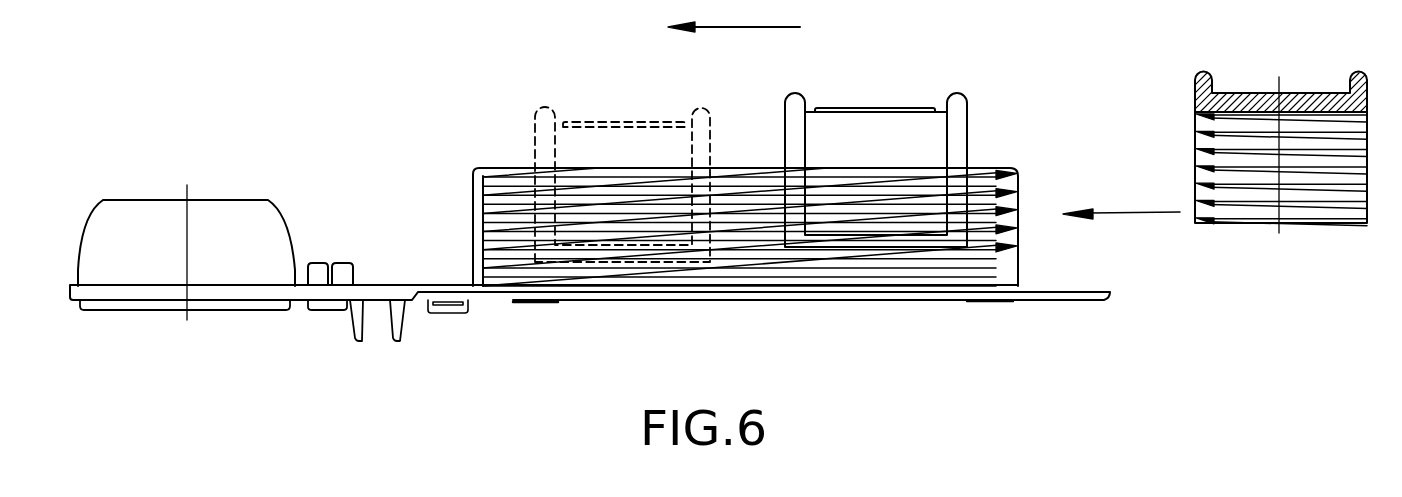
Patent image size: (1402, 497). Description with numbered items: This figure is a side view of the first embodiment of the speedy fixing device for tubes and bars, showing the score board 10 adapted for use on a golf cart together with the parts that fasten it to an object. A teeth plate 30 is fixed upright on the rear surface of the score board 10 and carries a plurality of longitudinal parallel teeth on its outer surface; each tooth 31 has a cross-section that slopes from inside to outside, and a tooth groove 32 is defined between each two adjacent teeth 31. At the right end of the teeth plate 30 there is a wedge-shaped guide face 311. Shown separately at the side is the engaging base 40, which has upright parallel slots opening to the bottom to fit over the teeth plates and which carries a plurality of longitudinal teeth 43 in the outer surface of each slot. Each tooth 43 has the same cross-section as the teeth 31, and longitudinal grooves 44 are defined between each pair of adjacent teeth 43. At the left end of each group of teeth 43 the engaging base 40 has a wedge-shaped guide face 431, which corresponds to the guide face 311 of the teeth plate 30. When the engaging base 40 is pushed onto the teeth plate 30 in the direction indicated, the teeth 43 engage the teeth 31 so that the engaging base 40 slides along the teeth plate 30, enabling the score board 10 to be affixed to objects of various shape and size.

The score board 10 is at (633, 298).
The teeth plate 30 is at (478, 267).
The tooth 31 is at (987, 170).
The tooth groove 32 is at (1015, 180).
The wedge-shaped guide face 311 is at (1015, 243).
The engaging base 40 is at (1240, 98).
The tooth 43 is at (1233, 207).
The longitudinal groove 44 is at (1262, 193).
The wedge-shaped guide face 431 is at (1195, 210).